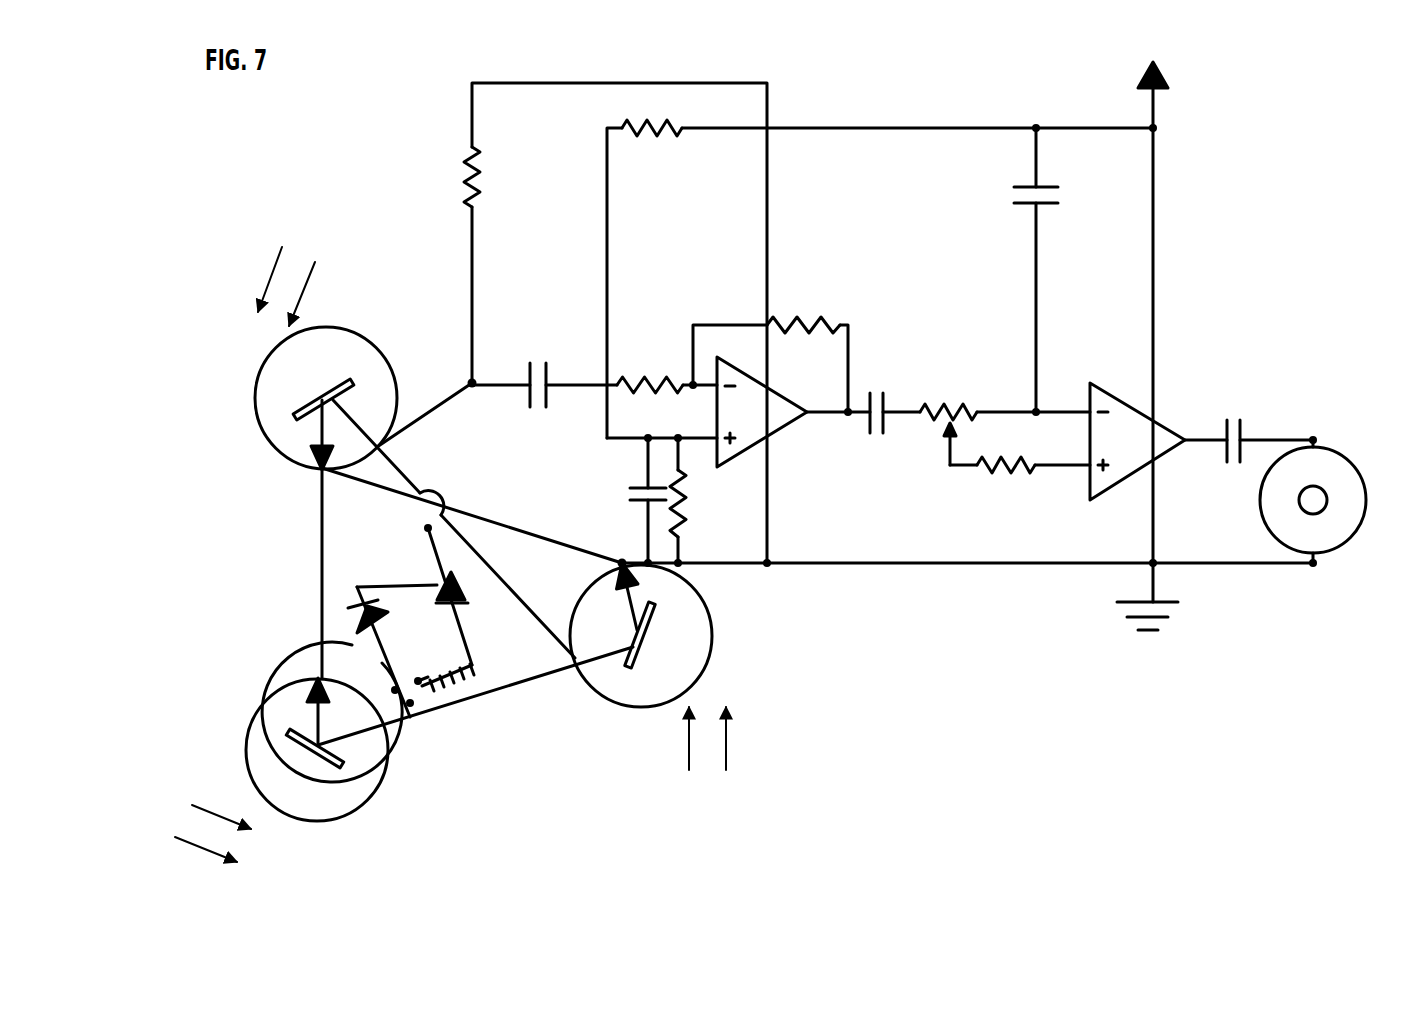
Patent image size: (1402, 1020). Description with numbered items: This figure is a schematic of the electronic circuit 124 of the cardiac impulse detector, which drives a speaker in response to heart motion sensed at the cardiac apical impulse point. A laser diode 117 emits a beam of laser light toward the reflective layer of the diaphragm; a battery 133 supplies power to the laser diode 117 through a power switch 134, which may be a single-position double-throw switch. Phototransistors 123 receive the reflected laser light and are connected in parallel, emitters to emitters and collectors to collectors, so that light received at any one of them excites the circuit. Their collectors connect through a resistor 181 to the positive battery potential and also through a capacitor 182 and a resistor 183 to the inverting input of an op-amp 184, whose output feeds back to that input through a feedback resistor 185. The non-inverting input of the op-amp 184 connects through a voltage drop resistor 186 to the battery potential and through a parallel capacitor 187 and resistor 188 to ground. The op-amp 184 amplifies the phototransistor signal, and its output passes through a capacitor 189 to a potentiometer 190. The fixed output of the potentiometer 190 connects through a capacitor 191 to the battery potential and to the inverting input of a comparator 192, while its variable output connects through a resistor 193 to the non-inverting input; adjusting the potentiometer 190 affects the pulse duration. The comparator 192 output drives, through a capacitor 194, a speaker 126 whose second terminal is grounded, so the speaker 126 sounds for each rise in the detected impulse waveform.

The laser diode 117 is at (437, 557).
The phototransistors 123 is at (255, 390).
The electronic circuit 124 is at (661, 76).
The speaker 126 is at (1354, 540).
The battery 133 is at (474, 692).
The power switch 134 is at (408, 707).
The resistor 181 is at (478, 190).
The capacitor 182 is at (538, 362).
The resistor 183 is at (637, 372).
The op-amp 184 is at (786, 427).
The feedback resistor 185 is at (808, 318).
The voltage drop resistor 186 is at (647, 133).
The capacitor 187 is at (630, 494).
The resistor 188 is at (689, 508).
The capacitor 189 is at (876, 437).
The potentiometer 190 is at (945, 401).
The capacitor 191 is at (1058, 205).
The comparator 192 is at (1163, 424).
The resistor 193 is at (1000, 475).
The capacitor 194 is at (1233, 418).